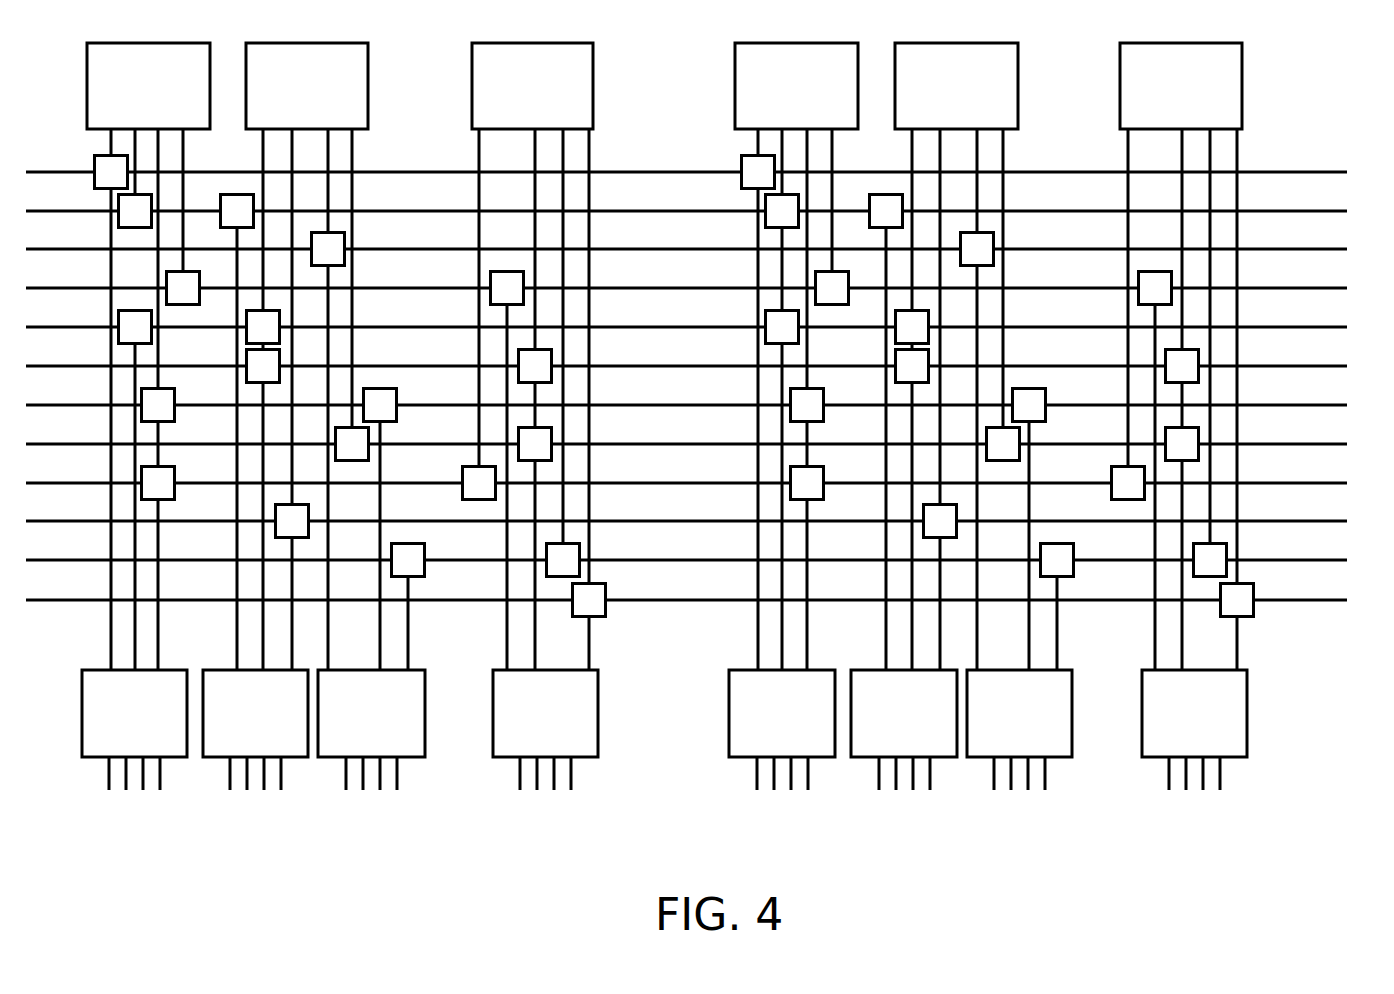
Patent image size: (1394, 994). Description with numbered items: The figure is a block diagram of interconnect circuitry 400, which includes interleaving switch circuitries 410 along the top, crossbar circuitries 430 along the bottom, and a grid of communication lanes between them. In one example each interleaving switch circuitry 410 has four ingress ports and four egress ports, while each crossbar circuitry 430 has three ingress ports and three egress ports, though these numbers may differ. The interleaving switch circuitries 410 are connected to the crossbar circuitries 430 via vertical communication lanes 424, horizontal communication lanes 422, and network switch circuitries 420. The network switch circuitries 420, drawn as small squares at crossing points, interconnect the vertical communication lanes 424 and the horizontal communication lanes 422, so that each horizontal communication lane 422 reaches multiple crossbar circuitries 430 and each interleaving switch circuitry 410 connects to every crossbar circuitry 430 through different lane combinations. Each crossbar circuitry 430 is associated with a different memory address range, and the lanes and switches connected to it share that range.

The interconnect circuitry 400 is at (701, 402).
The interleaving switch circuitries 410 is at (168, 101).
The network switch circuitries 420 is at (95, 158).
The horizontal communication lanes 422 is at (1320, 167).
The vertical communication lanes 424 is at (185, 150).
The crossbar circuitries 430 is at (153, 728).